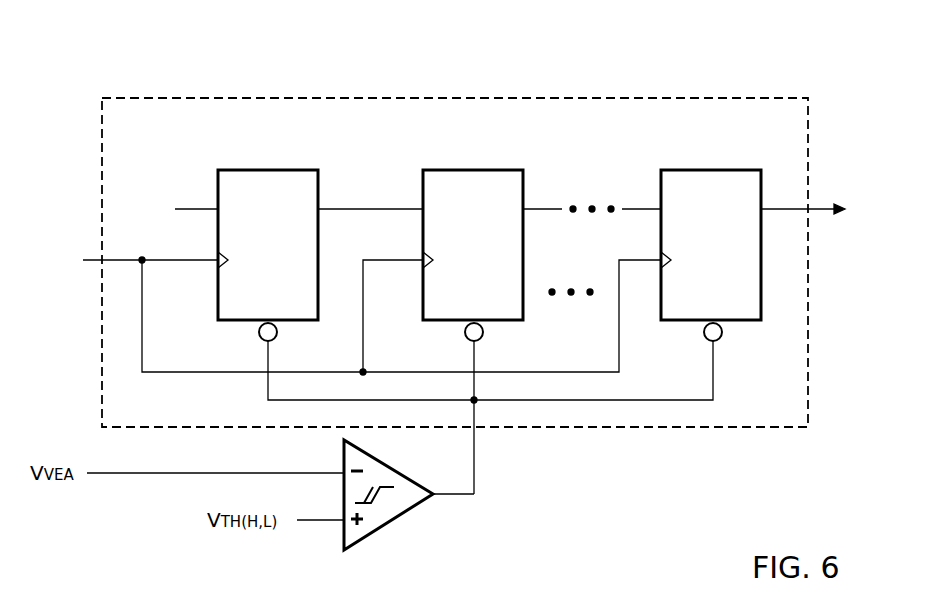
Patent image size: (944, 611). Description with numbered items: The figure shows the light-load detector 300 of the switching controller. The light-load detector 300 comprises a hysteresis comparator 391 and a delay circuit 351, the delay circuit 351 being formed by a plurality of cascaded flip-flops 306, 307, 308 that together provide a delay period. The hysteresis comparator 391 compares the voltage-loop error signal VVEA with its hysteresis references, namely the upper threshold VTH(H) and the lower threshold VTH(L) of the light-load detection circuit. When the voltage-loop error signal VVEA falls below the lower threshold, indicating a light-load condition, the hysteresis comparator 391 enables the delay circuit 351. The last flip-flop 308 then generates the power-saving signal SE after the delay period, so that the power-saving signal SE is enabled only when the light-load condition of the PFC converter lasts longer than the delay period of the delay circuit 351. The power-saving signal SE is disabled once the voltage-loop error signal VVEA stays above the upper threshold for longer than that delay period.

The light-load detector 300 is at (809, 53).
The flip-flop 306 is at (265, 170).
The flip-flop 307 is at (470, 170).
The flip-flop 308 is at (706, 170).
The delay circuit 351 is at (808, 326).
The hysteresis comparator 391 is at (387, 527).